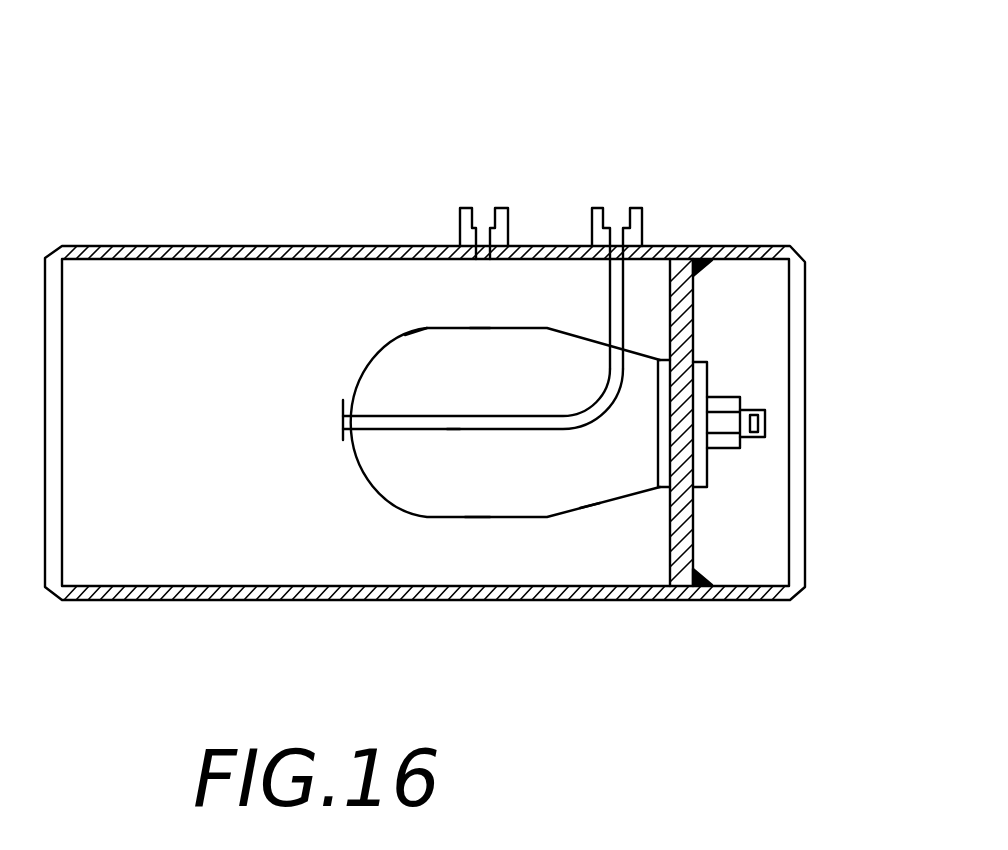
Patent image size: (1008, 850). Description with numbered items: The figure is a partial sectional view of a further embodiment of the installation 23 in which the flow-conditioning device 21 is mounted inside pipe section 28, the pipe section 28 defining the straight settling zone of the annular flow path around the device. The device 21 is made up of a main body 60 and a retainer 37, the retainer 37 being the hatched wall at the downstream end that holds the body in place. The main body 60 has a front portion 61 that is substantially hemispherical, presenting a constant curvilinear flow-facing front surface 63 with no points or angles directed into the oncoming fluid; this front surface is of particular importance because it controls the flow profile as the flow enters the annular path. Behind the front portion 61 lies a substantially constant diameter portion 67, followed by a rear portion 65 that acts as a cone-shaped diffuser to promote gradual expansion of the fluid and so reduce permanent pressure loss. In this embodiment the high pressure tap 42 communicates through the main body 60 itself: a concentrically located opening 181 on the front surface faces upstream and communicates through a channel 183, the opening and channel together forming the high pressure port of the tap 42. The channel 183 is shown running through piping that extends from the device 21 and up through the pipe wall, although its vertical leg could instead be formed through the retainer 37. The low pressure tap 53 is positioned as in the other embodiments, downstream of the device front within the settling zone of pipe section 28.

The fuel tank assembly 23 is at (530, 155).
The pipe section 28 is at (163, 246).
The retainer 37 is at (693, 329).
The low pressure tap 53 is at (487, 208).
The high pressure tap 42 is at (620, 208).
The concentrically located opening 181 is at (341, 423).
The channel 183 is at (447, 425).
The main body 60 is at (380, 463).
The front portion 61 is at (415, 358).
The front surface 63 is at (353, 374).
The constant diameter portion 67 is at (475, 352).
The rear portion 65 is at (590, 507).
The device 21 is at (477, 518).